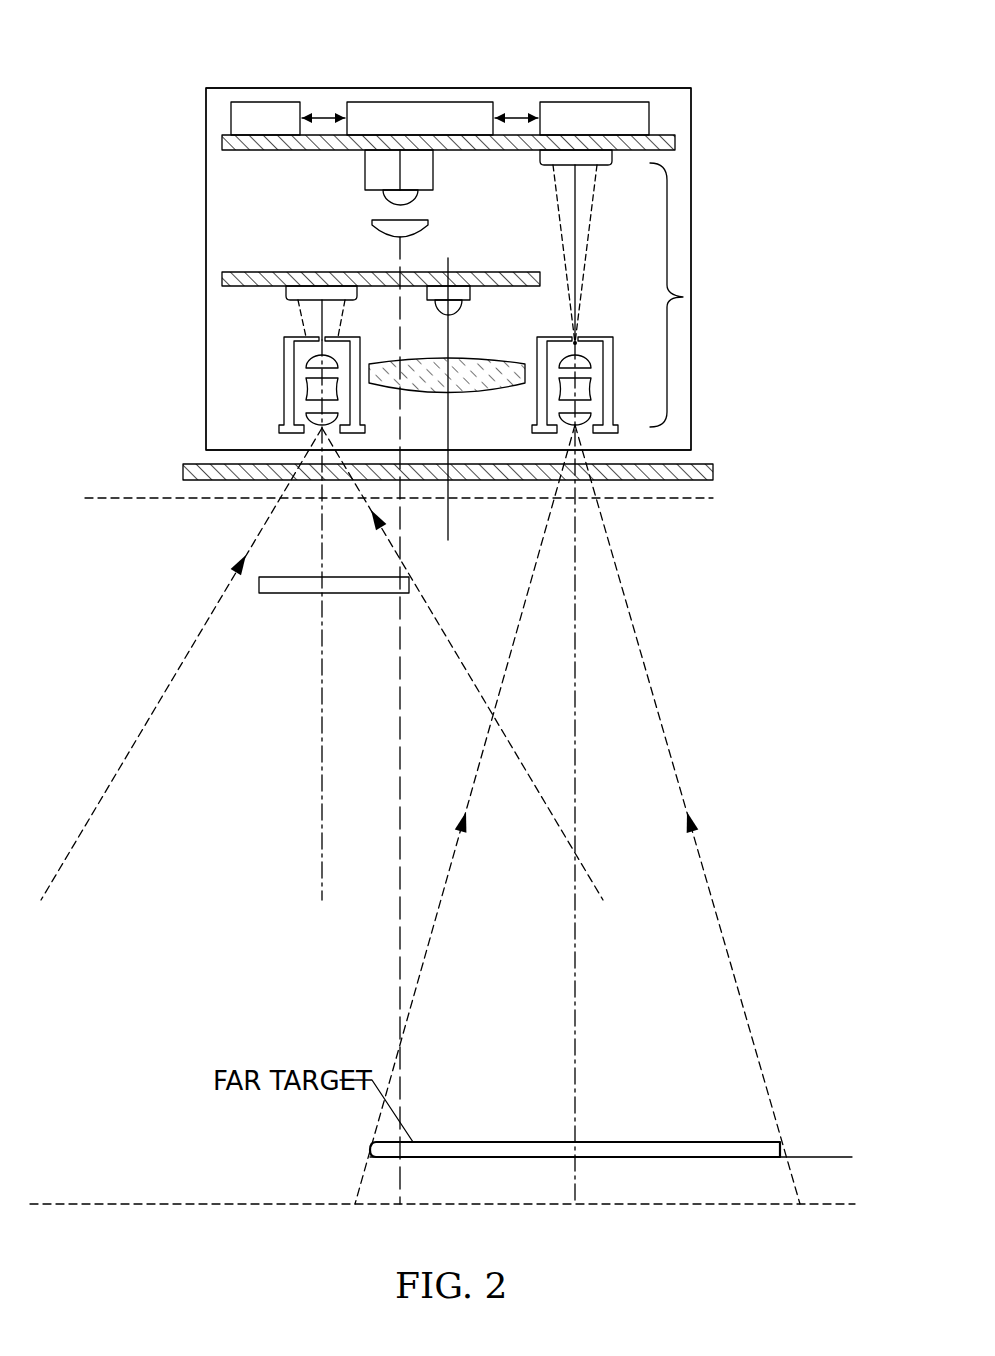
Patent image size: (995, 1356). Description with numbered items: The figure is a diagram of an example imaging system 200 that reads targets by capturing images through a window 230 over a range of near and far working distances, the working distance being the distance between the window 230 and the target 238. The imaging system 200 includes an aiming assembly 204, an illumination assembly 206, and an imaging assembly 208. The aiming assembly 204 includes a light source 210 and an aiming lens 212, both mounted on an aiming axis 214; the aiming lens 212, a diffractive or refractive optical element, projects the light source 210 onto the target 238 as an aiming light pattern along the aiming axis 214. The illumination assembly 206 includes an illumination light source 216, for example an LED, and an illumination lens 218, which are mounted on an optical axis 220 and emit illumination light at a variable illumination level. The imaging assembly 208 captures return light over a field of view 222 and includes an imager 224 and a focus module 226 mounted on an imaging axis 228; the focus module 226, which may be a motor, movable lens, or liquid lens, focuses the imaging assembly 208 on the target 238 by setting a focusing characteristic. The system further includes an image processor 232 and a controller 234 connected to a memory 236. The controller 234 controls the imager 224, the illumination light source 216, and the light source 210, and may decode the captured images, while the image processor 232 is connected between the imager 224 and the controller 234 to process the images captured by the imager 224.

The imaging system 200 is at (127, 45).
The aiming assembly 204 is at (122, 113).
The illumination assembly 206 is at (763, 350).
The imaging assembly 208 is at (683, 297).
The light source 210 is at (365, 184).
The aiming lens 212 is at (372, 228).
The aiming axis 214 is at (400, 836).
The illumination light source 216 is at (458, 316).
The illumination lens 218 is at (562, 361).
The optical axis 220 is at (449, 512).
The field of view 222 is at (666, 738).
The imager 224 is at (613, 152).
The focus module 226 is at (595, 407).
The imaging axis 228 is at (577, 960).
The window 230 is at (713, 472).
The image processor 232 is at (265, 102).
The controller 234 is at (420, 102).
The memory 236 is at (595, 102).
The target 238 is at (780, 1150).